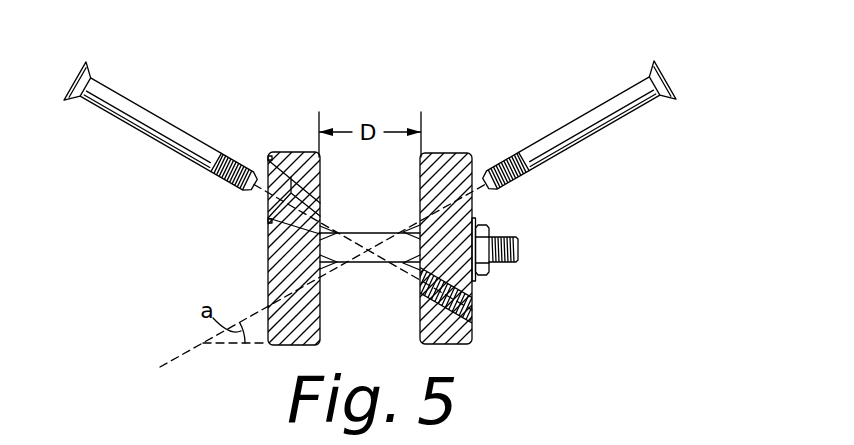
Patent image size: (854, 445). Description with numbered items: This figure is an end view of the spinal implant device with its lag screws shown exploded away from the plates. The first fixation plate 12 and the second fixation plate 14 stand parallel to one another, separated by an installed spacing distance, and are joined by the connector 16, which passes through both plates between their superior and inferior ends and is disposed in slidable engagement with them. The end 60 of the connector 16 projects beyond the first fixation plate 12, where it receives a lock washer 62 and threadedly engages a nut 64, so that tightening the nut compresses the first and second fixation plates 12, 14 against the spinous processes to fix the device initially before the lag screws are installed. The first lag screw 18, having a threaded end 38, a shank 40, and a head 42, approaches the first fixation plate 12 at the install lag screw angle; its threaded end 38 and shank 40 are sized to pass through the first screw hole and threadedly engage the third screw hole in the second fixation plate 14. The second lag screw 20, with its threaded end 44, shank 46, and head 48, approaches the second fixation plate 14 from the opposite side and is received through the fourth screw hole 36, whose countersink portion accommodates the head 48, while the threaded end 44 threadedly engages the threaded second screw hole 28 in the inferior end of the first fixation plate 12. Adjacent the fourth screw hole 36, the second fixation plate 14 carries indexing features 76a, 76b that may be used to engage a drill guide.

The first fixation plate 12 is at (445, 151).
The second fixation plate 14 is at (288, 154).
The connector 16 is at (366, 234).
The first lag screw 18 is at (617, 98).
The second lag screw 20 is at (147, 108).
The second screw hole 28 is at (490, 320).
The fourth screw hole 36 is at (252, 201).
The threaded end 38 is at (502, 157).
The shank 40 is at (608, 128).
The head 42 is at (667, 76).
The threaded end 44 is at (232, 153).
The shank 46 is at (120, 118).
The head 48 is at (78, 79).
The end 60 is at (519, 249).
The lock washer 62 is at (476, 221).
The nut 64 is at (487, 273).
The indexing feature 76a is at (263, 157).
The indexing feature 76b is at (266, 223).